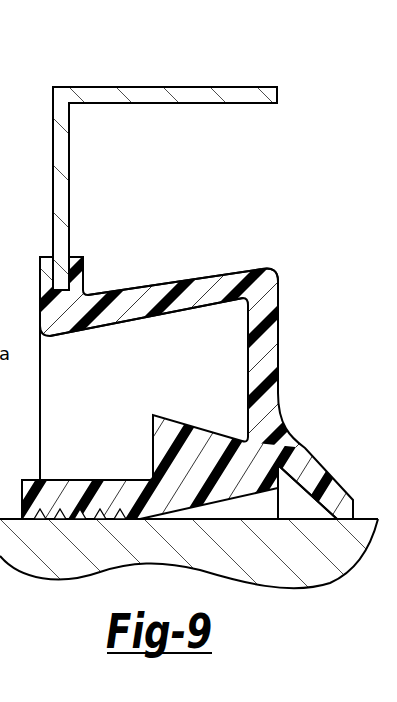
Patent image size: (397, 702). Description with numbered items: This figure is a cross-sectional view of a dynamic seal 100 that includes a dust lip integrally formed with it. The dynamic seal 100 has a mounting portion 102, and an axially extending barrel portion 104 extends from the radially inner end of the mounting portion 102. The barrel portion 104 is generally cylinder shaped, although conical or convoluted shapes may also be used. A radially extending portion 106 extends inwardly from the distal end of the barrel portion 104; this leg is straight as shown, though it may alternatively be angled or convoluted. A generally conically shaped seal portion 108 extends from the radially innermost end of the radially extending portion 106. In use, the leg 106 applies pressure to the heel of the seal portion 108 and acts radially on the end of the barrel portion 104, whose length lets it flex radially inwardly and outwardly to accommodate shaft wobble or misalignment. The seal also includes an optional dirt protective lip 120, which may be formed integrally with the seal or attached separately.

The dynamic seal 100 is at (286, 248).
The mounting portion 102 is at (83, 280).
The axially extending barrel portion 104 is at (182, 281).
The radially extending portion 106 is at (262, 337).
The generally conically shaped seal portion 108 is at (120, 490).
The dirt protective lip 120 is at (320, 483).